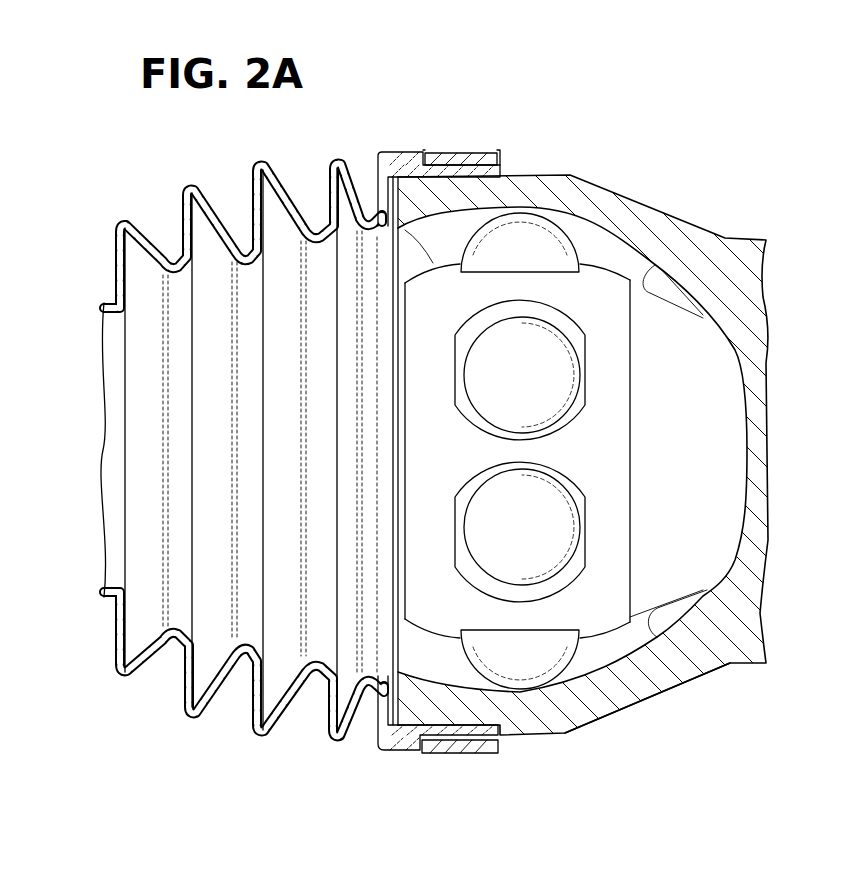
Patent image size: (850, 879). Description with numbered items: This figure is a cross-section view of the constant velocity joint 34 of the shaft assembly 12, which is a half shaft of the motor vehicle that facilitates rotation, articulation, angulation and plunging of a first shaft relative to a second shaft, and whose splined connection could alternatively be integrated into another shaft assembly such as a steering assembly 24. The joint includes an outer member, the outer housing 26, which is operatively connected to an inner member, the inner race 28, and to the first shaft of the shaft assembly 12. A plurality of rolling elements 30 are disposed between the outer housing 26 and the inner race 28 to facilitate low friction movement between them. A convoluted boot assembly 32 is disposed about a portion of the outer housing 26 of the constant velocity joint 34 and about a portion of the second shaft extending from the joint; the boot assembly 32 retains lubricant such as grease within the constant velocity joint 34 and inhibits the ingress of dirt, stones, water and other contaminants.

The shaft assembly 12 is at (619, 438).
The steering assembly 24 is at (300, 472).
The outer housing 26 is at (587, 188).
The inner race 28 is at (630, 352).
The rolling elements 30 is at (550, 245).
The boot assembly 32 is at (193, 719).
The constant velocity joint 34 is at (662, 707).